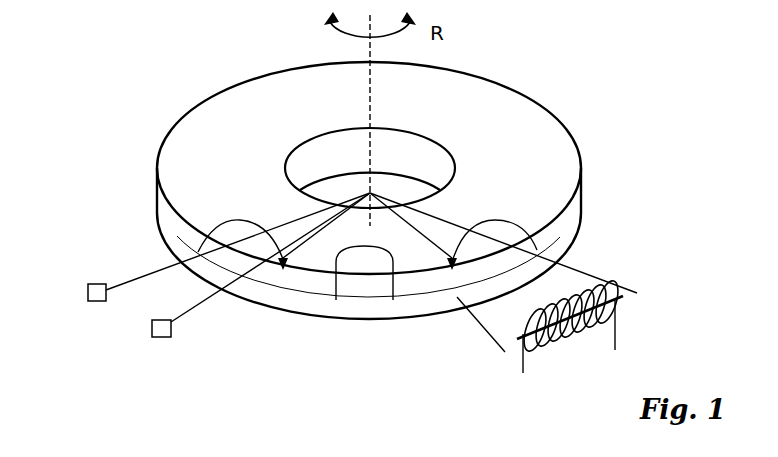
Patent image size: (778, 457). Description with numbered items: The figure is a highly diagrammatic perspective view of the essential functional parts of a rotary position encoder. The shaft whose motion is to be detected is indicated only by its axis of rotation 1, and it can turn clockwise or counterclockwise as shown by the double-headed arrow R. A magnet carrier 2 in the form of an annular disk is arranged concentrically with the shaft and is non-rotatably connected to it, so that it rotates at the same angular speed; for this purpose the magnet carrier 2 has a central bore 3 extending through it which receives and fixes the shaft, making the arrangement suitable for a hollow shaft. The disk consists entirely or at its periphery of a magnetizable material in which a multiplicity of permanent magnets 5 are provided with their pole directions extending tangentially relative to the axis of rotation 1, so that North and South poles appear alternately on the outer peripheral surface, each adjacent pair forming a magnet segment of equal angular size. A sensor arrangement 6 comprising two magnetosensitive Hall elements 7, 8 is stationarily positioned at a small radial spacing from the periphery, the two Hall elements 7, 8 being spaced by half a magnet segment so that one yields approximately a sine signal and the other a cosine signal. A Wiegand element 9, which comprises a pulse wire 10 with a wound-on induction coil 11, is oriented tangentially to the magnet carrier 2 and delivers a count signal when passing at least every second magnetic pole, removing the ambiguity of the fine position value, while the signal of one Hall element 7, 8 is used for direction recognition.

The axis of rotation 1 is at (372, 103).
The magnet carrier 2 is at (568, 148).
The central bore 3 is at (320, 160).
The permanent magnets 5 is at (216, 222).
The sensor arrangement 6 is at (203, 298).
The Hall element 7 is at (88, 292).
The Hall element 8 is at (163, 337).
The Wiegand element 9 is at (595, 362).
The pulse wire 10 is at (624, 308).
The induction coil 11 is at (563, 352).